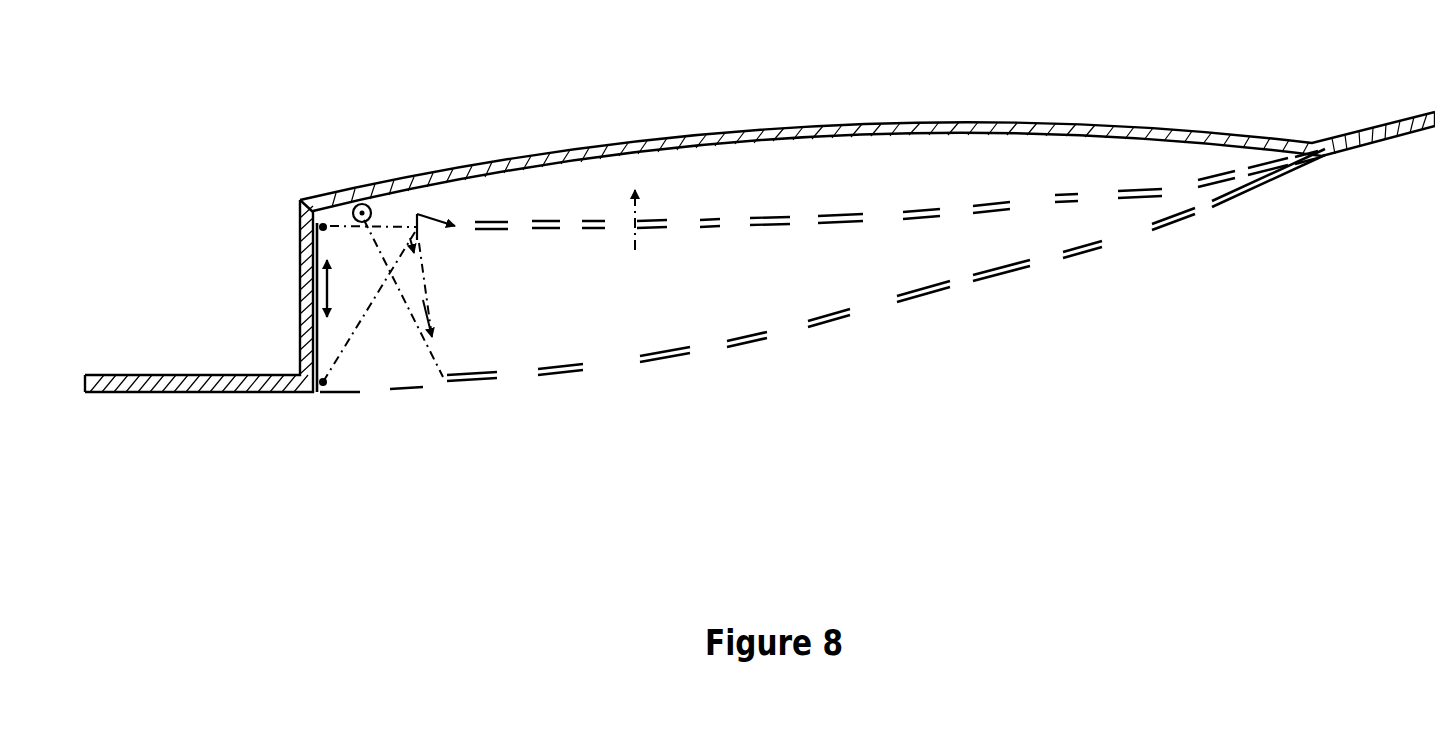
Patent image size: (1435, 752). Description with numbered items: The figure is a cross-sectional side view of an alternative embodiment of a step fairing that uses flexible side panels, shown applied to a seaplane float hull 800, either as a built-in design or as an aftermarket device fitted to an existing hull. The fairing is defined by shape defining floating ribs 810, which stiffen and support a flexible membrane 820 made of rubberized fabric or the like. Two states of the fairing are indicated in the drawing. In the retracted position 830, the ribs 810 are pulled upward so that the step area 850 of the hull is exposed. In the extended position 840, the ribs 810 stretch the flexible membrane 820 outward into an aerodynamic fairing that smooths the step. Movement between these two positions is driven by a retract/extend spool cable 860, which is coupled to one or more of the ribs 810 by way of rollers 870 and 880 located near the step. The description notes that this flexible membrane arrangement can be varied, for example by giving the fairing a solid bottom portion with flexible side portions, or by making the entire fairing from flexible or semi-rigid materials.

The float hull 800 is at (729, 134).
The floating ribs 810 is at (833, 311).
The flexible membrane 820 is at (758, 345).
The retracted position 830 is at (706, 220).
The extended position 840 is at (659, 338).
The step area 850 is at (584, 295).
The retract/extend spool cable 860 is at (359, 202).
The roller 870 is at (306, 209).
The roller 880 is at (320, 390).